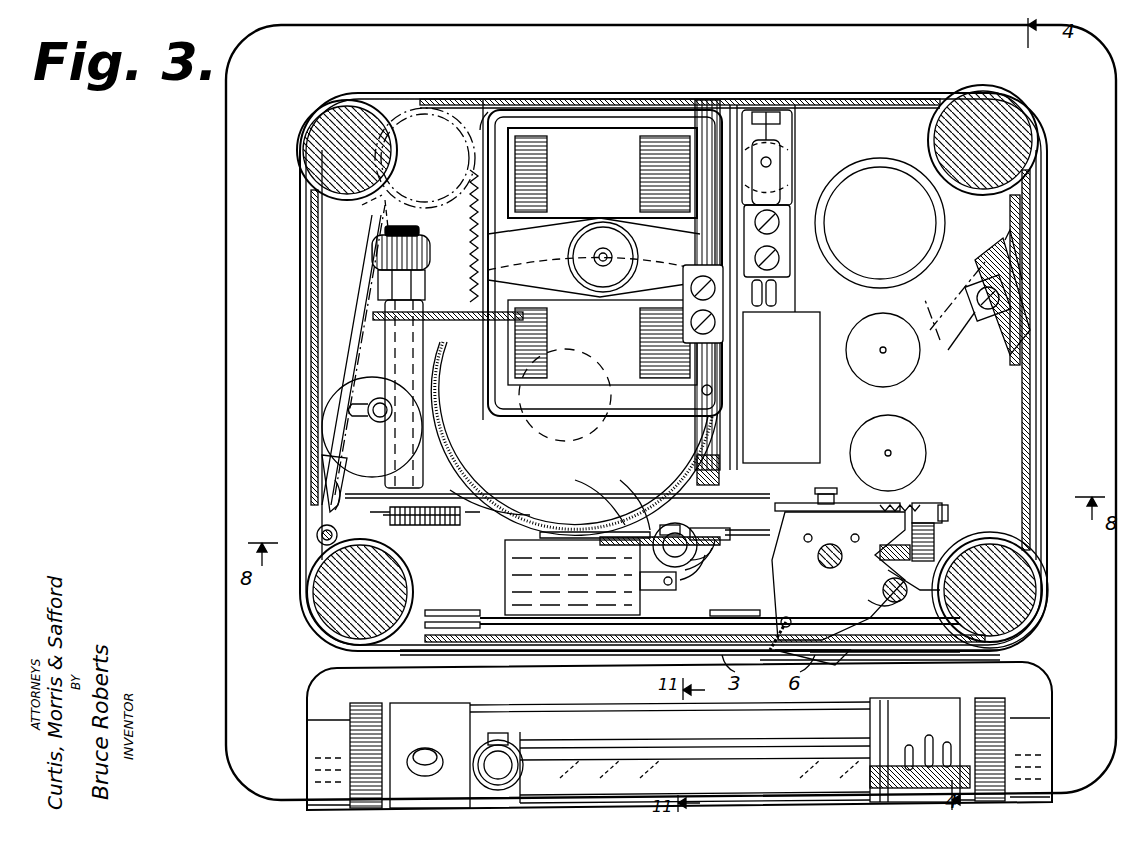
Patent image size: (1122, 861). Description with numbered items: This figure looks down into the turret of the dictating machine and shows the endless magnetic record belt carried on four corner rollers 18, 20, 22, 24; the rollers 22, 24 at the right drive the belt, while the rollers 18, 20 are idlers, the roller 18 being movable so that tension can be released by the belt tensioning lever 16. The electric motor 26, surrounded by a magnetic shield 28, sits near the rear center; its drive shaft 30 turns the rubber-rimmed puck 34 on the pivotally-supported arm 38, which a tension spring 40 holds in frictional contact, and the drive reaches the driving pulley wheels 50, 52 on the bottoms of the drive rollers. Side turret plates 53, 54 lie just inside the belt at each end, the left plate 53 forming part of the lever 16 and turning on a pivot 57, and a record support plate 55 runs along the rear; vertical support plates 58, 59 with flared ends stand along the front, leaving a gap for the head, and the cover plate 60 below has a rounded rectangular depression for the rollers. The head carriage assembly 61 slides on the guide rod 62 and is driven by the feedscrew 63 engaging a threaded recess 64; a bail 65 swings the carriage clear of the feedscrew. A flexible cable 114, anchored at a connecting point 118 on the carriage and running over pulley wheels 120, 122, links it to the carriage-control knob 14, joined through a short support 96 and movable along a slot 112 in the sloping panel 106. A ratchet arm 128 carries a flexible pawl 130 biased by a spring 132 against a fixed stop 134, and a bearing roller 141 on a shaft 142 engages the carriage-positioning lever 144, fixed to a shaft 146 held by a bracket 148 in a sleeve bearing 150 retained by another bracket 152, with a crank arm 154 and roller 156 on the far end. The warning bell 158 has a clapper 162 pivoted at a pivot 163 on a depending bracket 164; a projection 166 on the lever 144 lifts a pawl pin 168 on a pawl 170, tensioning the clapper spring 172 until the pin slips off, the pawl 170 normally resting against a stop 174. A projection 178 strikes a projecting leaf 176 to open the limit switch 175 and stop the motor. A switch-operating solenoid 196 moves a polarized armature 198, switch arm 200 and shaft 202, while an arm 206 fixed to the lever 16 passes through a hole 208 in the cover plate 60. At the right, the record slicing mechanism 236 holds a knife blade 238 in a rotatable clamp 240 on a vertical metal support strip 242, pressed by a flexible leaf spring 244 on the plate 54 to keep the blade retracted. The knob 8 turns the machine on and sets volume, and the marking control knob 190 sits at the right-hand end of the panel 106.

The knob 8 is at (362, 720).
The carriage-control knob 14 is at (498, 768).
The belt tensioning lever 16 is at (312, 222).
The roller 18 is at (340, 147).
The roller 20 is at (340, 607).
The roller 22 is at (1010, 588).
The roller 24 is at (1005, 128).
The electric motor 26 is at (600, 176).
The magnetic shield 28 is at (488, 104).
The motor drive shaft 30 is at (608, 255).
The puck 34 is at (505, 528).
The pivotally-supported arm 38 is at (358, 372).
The tension spring 40 is at (488, 270).
The driving pulley wheel 50 is at (928, 141).
The driving pulley wheel 52 is at (992, 532).
The side turret plate 53 is at (318, 300).
The side turret plate 54 is at (1030, 415).
The record support plate 55 is at (822, 103).
The pivot 57 is at (318, 533).
The vertical support plate 58 is at (592, 648).
The vertical support plate 59 is at (928, 650).
The cover plate 60 is at (250, 375).
The carriage assembly 61 is at (822, 602).
The guide rod 62 is at (818, 556).
The feedscrew 63 is at (890, 600).
The threaded recess 64 is at (883, 590).
The bail 65 is at (915, 592).
The short support 96 is at (500, 733).
The sloping panel 106 is at (318, 768).
The slot 112 is at (568, 735).
The flexible cable 114 is at (494, 618).
The connecting point 118 is at (790, 623).
The pulley wheel 120 is at (455, 612).
The pulley wheel 122 is at (740, 612).
The ratchet arm 128 is at (868, 510).
The flexible pawl 130 is at (938, 535).
The spring 132 is at (910, 505).
The fixed stop 134 is at (942, 512).
The bearing roller 141 is at (827, 488).
The shaft 142 is at (831, 538).
The carriage-positioning lever 144 is at (528, 497).
The shaft 146 is at (403, 232).
The bracket 148 is at (470, 492).
The sleeve bearing 150 is at (408, 440).
The bracket 152 is at (430, 340).
The crank arm 154 is at (425, 284).
The roller 156 is at (418, 250).
The warning bell 158 is at (600, 466).
The clapper 162 is at (568, 527).
The pivot 163 is at (635, 530).
The depending bracket 164 is at (610, 560).
The projection 166 is at (780, 470).
The pawl pin 168 is at (772, 498).
The pawl 170 is at (750, 535).
The clapper spring 172 is at (682, 528).
The stop 174 is at (700, 548).
The limit switch 175 is at (708, 376).
The projecting leaf 176 is at (693, 455).
The projection 178 is at (690, 472).
The marking control knob 190 is at (995, 727).
The switch-operating solenoid 196 is at (510, 563).
The polarized armature 198 is at (640, 582).
The switch arm 200 is at (690, 585).
The shaft 202 is at (695, 575).
The arm 206 is at (330, 472).
The hole 208 is at (338, 512).
The record slicing mechanism 236 is at (918, 300).
The knife blade 238 is at (960, 358).
The rotatable clamp 240 is at (985, 262).
The vertical metal support strip 242 is at (1000, 298).
The flexible leaf spring 244 is at (1008, 262).